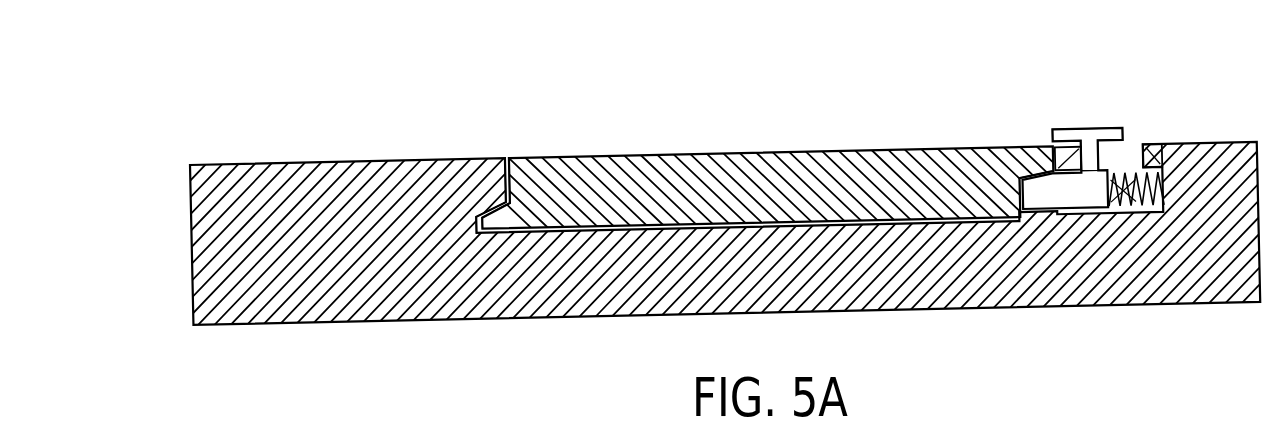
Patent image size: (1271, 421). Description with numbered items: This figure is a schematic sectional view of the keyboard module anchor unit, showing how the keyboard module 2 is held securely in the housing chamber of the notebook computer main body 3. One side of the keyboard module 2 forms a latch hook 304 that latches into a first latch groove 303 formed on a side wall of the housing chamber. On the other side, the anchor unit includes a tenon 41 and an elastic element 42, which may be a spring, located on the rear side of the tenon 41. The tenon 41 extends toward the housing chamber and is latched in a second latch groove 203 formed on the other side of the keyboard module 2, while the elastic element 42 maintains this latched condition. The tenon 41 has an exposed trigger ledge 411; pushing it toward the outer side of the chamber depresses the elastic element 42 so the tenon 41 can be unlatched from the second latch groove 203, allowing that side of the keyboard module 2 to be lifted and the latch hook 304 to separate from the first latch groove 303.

The notebook computer main body 3 is at (353, 200).
The keyboard module 2 is at (640, 183).
The tenon 41 is at (1034, 139).
The trigger ledge 411 is at (1089, 127).
The elastic element 42 is at (1150, 160).
The second latch groove 203 is at (1020, 210).
The first latch groove 303 is at (476, 234).
The latch hook 304 is at (507, 233).